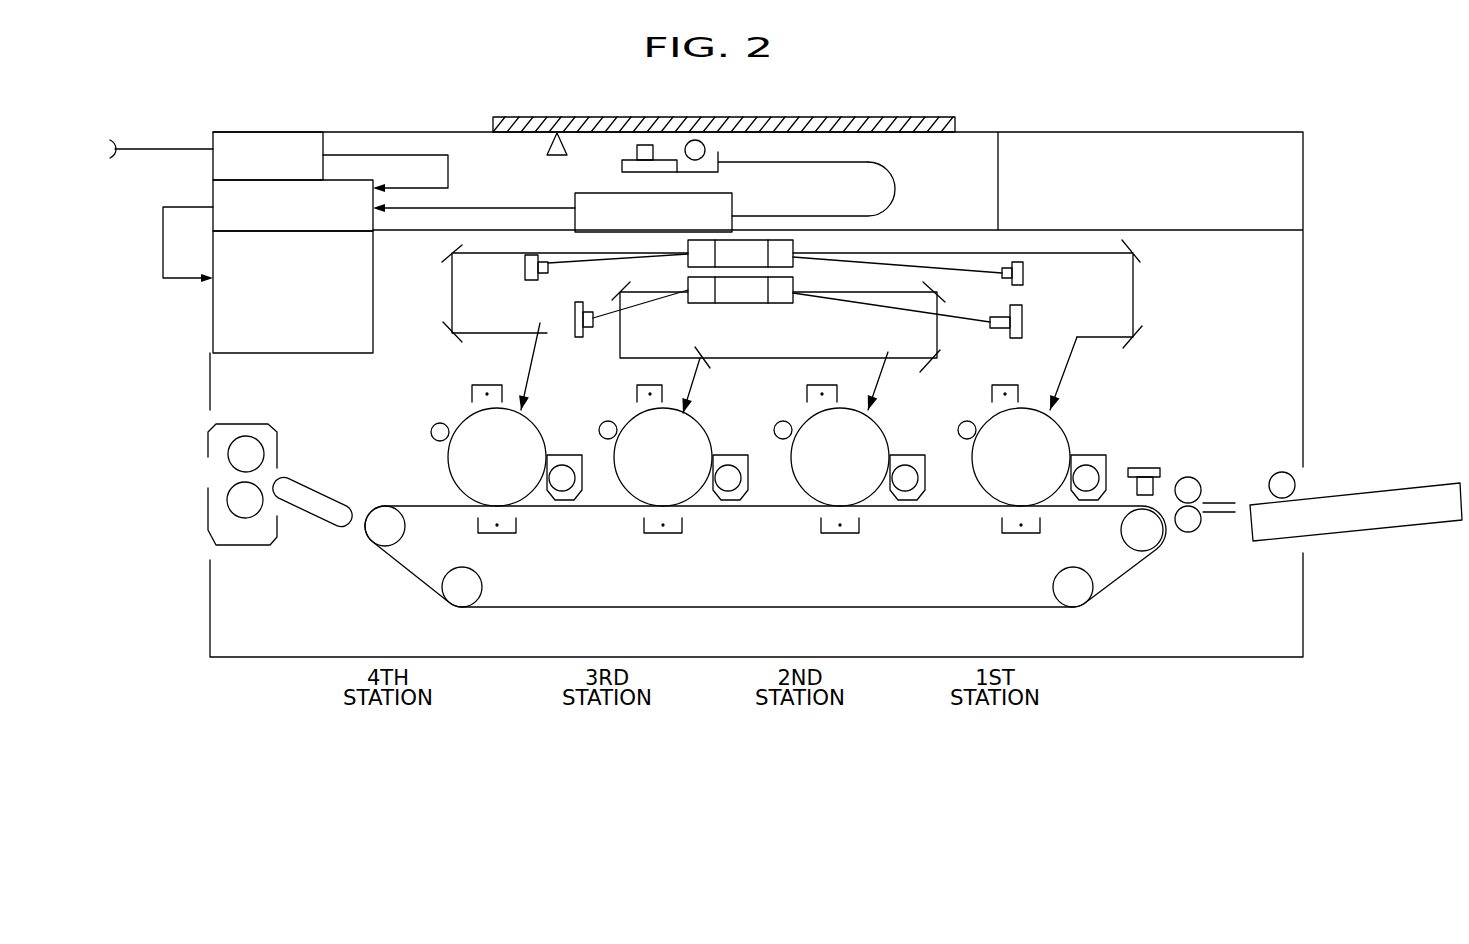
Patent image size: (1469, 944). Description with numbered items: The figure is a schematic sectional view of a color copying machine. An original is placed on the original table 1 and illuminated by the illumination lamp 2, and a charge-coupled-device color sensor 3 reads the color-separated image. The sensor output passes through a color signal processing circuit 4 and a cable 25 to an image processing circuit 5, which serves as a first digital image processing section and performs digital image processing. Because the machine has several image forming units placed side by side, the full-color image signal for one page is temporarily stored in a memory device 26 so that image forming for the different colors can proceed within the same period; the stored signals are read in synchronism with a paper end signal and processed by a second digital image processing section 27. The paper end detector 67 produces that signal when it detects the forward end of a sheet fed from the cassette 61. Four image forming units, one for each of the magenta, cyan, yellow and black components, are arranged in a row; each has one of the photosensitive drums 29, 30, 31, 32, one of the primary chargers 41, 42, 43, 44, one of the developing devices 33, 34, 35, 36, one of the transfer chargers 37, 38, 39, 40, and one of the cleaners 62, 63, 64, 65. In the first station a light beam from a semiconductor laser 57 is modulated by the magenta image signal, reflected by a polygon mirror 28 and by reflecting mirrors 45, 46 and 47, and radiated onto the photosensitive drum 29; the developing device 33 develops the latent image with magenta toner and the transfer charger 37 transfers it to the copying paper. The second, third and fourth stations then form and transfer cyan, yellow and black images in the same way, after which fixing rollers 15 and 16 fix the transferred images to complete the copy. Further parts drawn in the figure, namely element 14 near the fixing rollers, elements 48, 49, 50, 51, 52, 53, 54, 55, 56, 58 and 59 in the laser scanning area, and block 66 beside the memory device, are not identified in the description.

The original table 1 is at (493, 118).
The illumination lamp 2 is at (706, 151).
The CCD color sensor 3 is at (637, 148).
The color signal processing circuit 4 is at (625, 166).
The image processing circuit 5 is at (616, 227).
The paper feed roller 14 is at (299, 478).
The fixing roller 15 is at (246, 450).
The fixing roller 16 is at (246, 514).
The cable 25 is at (893, 176).
The memory device 26 is at (278, 222).
The second digital image processing section 27 is at (278, 296).
The polygon mirror 28 is at (768, 304).
The photosensitive drum 29 is at (1009, 472).
The photosensitive drum 30 is at (828, 472).
The photosensitive drum 31 is at (651, 472).
The photosensitive drum 32 is at (485, 472).
The developing device 33 is at (1093, 454).
The developing device 34 is at (907, 452).
The developing device 35 is at (730, 452).
The developing device 36 is at (557, 452).
The transfer charger 37 is at (1028, 535).
The transfer charger 38 is at (845, 535).
The transfer charger 39 is at (668, 535).
The transfer charger 40 is at (503, 535).
The primary charger 41 is at (992, 390).
The primary charger 42 is at (807, 390).
The primary charger 43 is at (637, 390).
The primary charger 44 is at (472, 390).
The reflecting mirror 45 is at (1140, 266).
The reflecting mirror 46 is at (1143, 339).
The reflecting mirror 47 is at (1082, 333).
The second optical path frame 48 is at (943, 301).
The optical path frame corner 49 is at (944, 358).
The beam detector / laser beam to second drum 50 is at (524, 263).
The optical path frame corner 51 is at (622, 298).
The optical path frame corner 52 is at (624, 356).
The laser beam to third drum 53 is at (697, 357).
The fourth optical path frame 54 is at (445, 258).
The optical path frame corner 55 is at (445, 328).
The laser beam to fourth drum 56 is at (543, 325).
The semiconductor laser 57 is at (1025, 279).
The beam detector 58 is at (1024, 321).
The beam detector 59 is at (579, 337).
The cassette 61 is at (1352, 498).
The cleaner 62 is at (963, 440).
The cleaner 63 is at (783, 440).
The cleaner 64 is at (606, 440).
The cleaner 65 is at (432, 435).
The interface 66 is at (232, 130).
The paper end detector 67 is at (1148, 466).